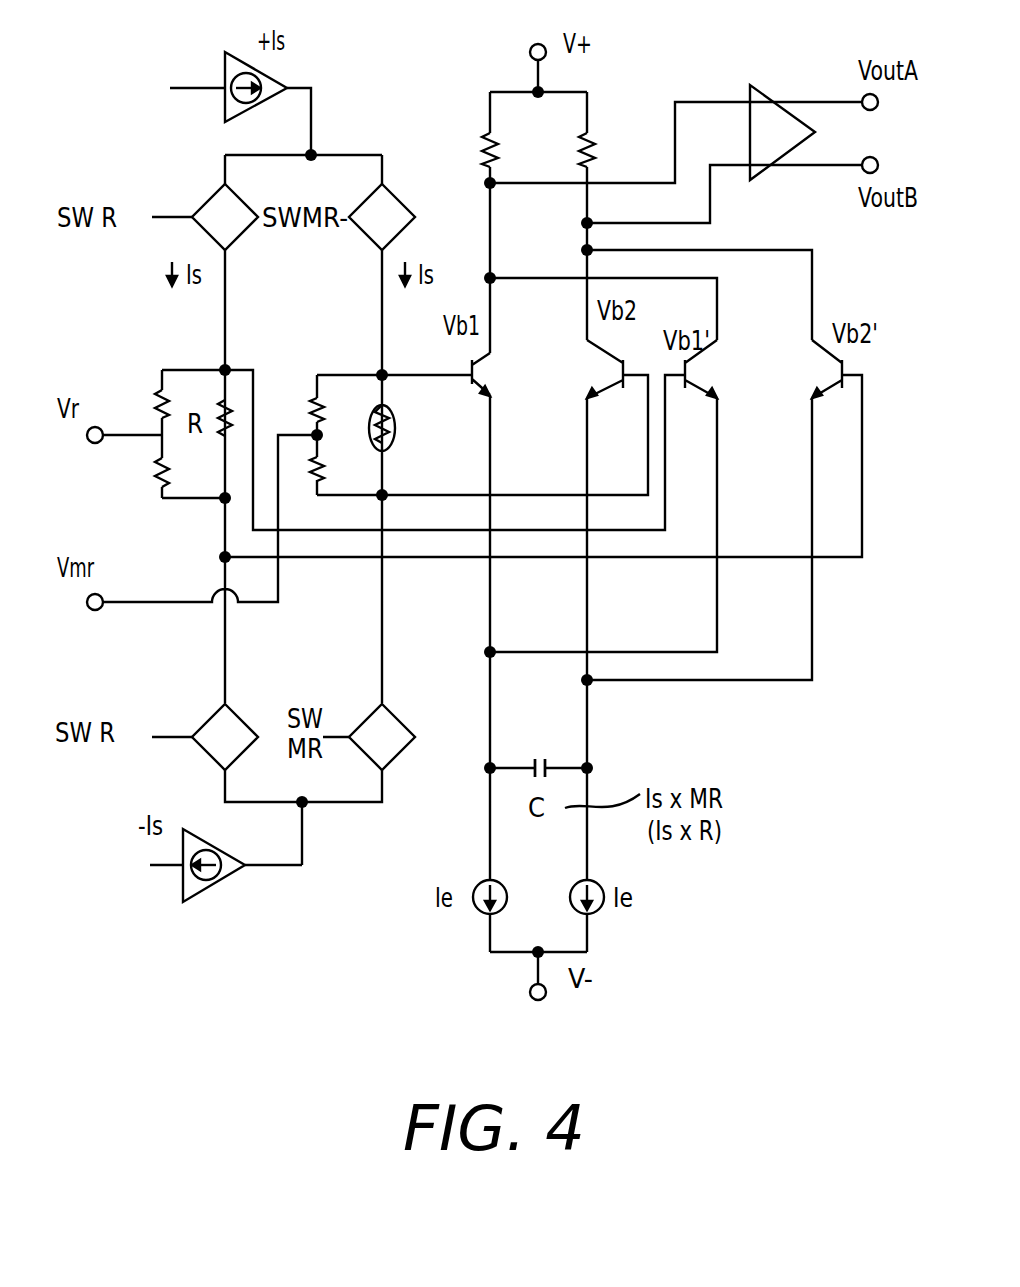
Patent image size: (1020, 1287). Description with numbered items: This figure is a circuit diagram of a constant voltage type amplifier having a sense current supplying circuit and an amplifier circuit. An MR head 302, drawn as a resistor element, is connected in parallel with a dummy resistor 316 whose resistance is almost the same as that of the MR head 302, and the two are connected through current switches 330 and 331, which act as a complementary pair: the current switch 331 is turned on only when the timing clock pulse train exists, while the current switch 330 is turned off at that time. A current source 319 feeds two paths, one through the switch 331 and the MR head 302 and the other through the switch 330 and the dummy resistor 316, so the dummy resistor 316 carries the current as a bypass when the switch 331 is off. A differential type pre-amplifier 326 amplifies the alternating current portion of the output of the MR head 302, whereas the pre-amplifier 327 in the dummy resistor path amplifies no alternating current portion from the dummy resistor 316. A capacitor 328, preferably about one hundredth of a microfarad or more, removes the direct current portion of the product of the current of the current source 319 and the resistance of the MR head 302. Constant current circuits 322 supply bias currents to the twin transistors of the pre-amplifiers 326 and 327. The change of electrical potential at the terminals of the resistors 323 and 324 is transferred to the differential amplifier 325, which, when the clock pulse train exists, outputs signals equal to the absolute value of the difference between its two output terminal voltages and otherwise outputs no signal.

The current source 319 is at (262, 478).
The current switch 330 is at (240, 717).
The current switch 331 is at (392, 717).
The dummy resistor 316 is at (232, 418).
The MR head 302 is at (404, 428).
The resistor 323 is at (490, 140).
The resistor 324 is at (587, 140).
The differential amplifier 325 is at (757, 100).
The pre-amplifier 326 is at (547, 376).
The pre-amplifier 327 is at (763, 375).
The capacitor 328 is at (536, 750).
The constant current circuit 322 is at (537, 914).